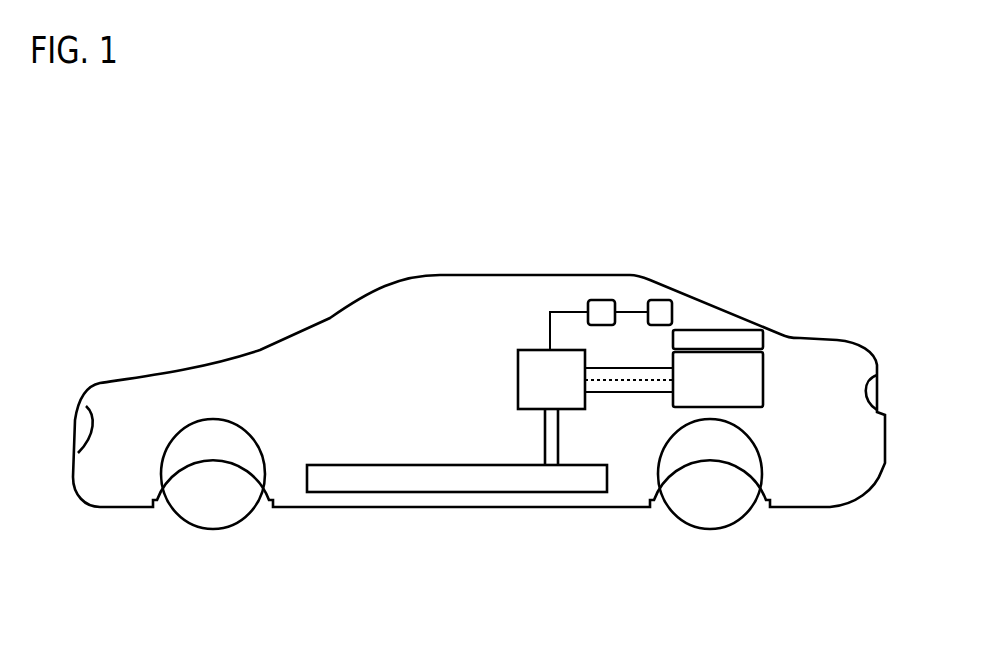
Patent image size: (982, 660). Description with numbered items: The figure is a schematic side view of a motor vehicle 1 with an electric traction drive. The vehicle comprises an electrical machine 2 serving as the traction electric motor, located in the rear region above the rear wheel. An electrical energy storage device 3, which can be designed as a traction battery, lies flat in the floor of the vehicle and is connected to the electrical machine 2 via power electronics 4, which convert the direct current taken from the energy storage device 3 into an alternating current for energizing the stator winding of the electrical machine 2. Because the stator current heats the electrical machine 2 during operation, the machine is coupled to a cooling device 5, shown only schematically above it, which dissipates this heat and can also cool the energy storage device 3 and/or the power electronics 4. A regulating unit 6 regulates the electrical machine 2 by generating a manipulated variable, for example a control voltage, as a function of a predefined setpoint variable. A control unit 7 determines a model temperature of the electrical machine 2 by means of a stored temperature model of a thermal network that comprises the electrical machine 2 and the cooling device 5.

The motor vehicle 1 is at (708, 279).
The electrical machine 2 is at (752, 398).
The electrical energy storage device 3 is at (425, 478).
The power electronics 4 is at (545, 385).
The cooling device 5 is at (752, 335).
The regulating unit 6 is at (602, 313).
The control unit 7 is at (660, 300).